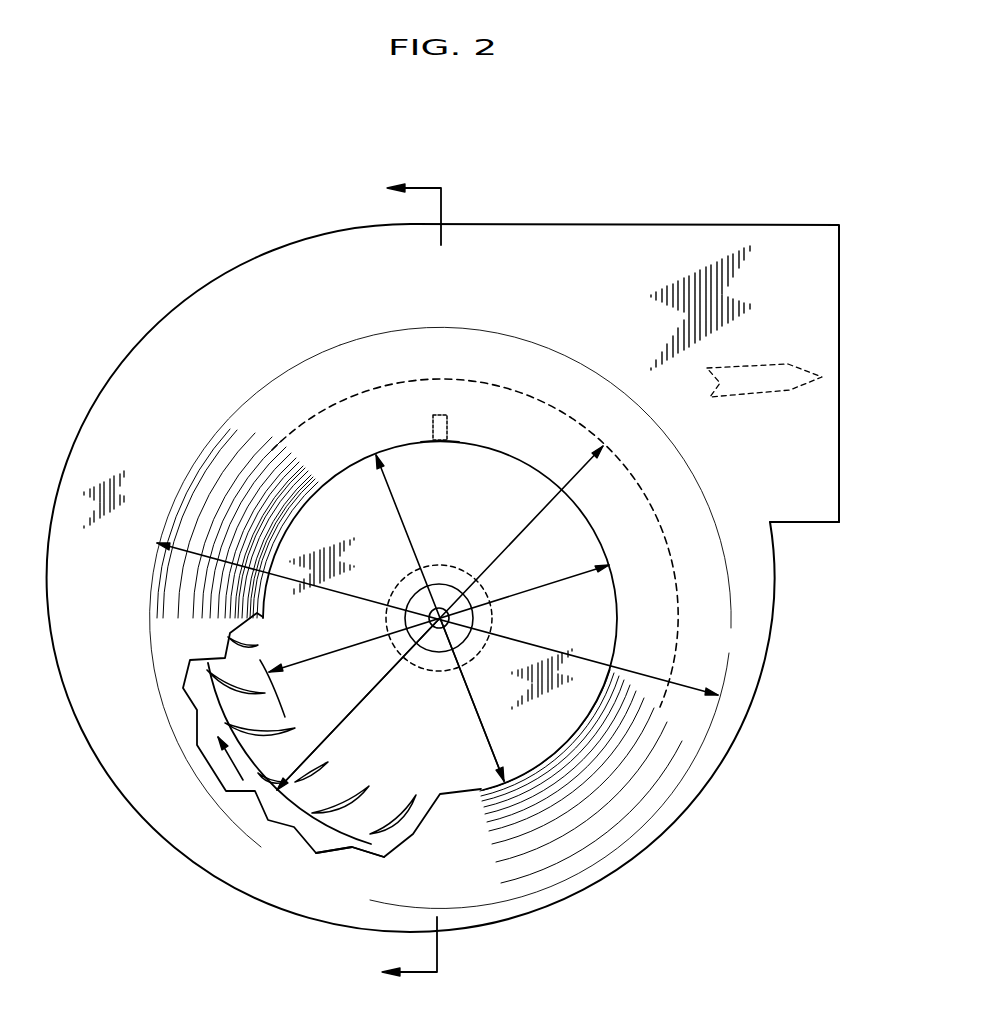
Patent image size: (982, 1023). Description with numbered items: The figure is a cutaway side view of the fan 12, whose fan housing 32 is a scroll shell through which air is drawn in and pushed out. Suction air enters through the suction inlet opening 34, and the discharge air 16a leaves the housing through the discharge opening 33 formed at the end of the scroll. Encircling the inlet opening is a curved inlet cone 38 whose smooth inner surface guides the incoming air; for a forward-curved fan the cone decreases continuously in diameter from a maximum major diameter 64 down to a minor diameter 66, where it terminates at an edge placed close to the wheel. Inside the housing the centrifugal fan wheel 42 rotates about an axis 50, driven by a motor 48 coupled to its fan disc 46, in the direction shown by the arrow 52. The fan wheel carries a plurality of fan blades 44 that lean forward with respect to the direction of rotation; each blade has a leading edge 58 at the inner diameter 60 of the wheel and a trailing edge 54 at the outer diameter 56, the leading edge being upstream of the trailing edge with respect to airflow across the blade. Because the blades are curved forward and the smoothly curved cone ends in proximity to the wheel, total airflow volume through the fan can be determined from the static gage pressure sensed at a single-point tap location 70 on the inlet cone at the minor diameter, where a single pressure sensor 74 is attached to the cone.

The fan 12 is at (163, 228).
The fan housing 32 is at (122, 360).
The discharge opening 33 is at (840, 503).
The discharge air 16a is at (752, 384).
The suction inlet opening 34 is at (576, 503).
The inlet cone 38 is at (329, 452).
The minor diameter 66 is at (488, 748).
The major diameter 64 is at (560, 483).
The outer diameter 56 is at (323, 740).
The inner diameter 60 is at (290, 650).
The motor 48 is at (492, 619).
The axis 50 is at (440, 584).
The pressure sensor 74 is at (433, 428).
The single-point tap location 70 is at (440, 443).
The centrifugal fan wheel 42 is at (215, 710).
The trailing edge 54 is at (300, 800).
The fan blades 44 is at (378, 817).
The leading edge 58 is at (368, 782).
The fan disc 46 is at (353, 822).
The arrow 52 is at (228, 770).